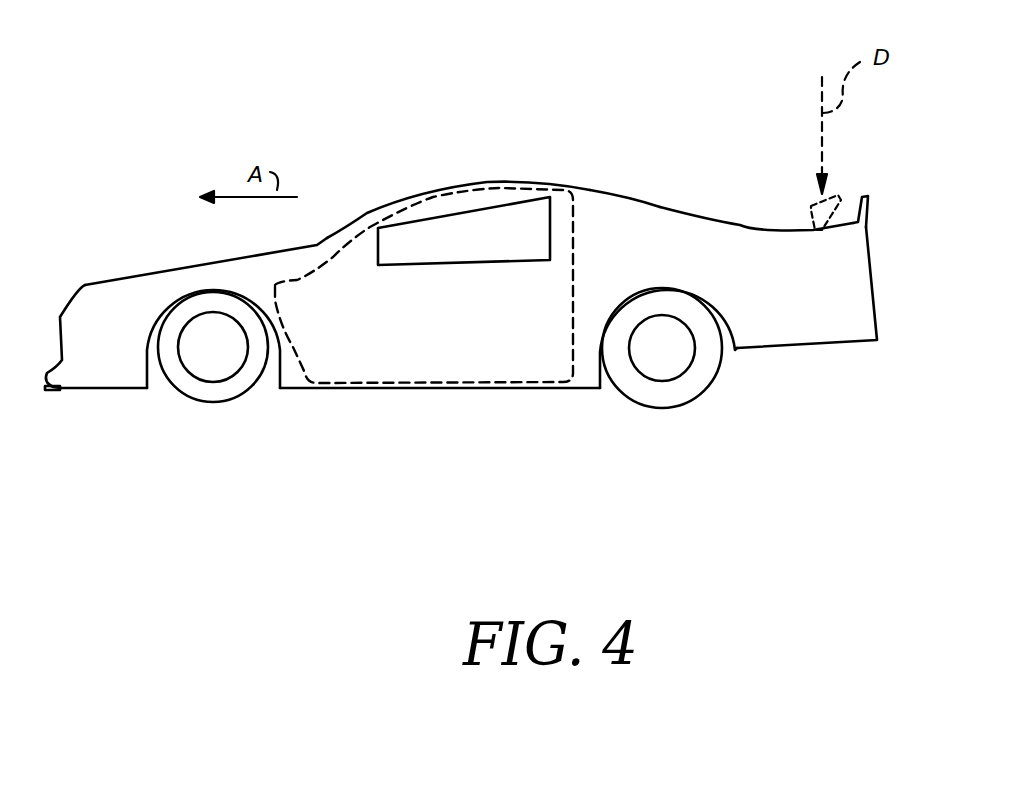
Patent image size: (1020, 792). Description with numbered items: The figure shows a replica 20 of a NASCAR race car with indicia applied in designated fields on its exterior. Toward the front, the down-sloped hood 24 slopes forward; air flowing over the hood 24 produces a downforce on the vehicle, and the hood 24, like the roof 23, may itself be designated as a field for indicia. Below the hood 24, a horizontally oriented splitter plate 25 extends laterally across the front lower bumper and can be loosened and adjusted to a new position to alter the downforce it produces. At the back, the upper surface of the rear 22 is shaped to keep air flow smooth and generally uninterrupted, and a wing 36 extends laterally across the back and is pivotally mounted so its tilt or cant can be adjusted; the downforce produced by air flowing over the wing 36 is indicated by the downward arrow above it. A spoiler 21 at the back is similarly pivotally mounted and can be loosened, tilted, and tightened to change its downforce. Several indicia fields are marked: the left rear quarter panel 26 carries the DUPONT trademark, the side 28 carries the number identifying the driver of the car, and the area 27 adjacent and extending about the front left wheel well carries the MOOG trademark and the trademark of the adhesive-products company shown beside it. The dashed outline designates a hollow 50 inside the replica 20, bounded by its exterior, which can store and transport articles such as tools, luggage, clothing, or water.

The replica 20 is at (322, 95).
The spoiler 21 is at (868, 210).
The rear 22 is at (740, 222).
The roof 23 is at (497, 180).
The hood 24 is at (148, 272).
The splitter plate 25 is at (60, 390).
The left rear quarter panel 26 is at (630, 227).
The area adjacent the front left wheel well 27 is at (137, 367).
The side 28 is at (490, 370).
The wing 36 is at (810, 202).
The hollow 50 is at (533, 385).